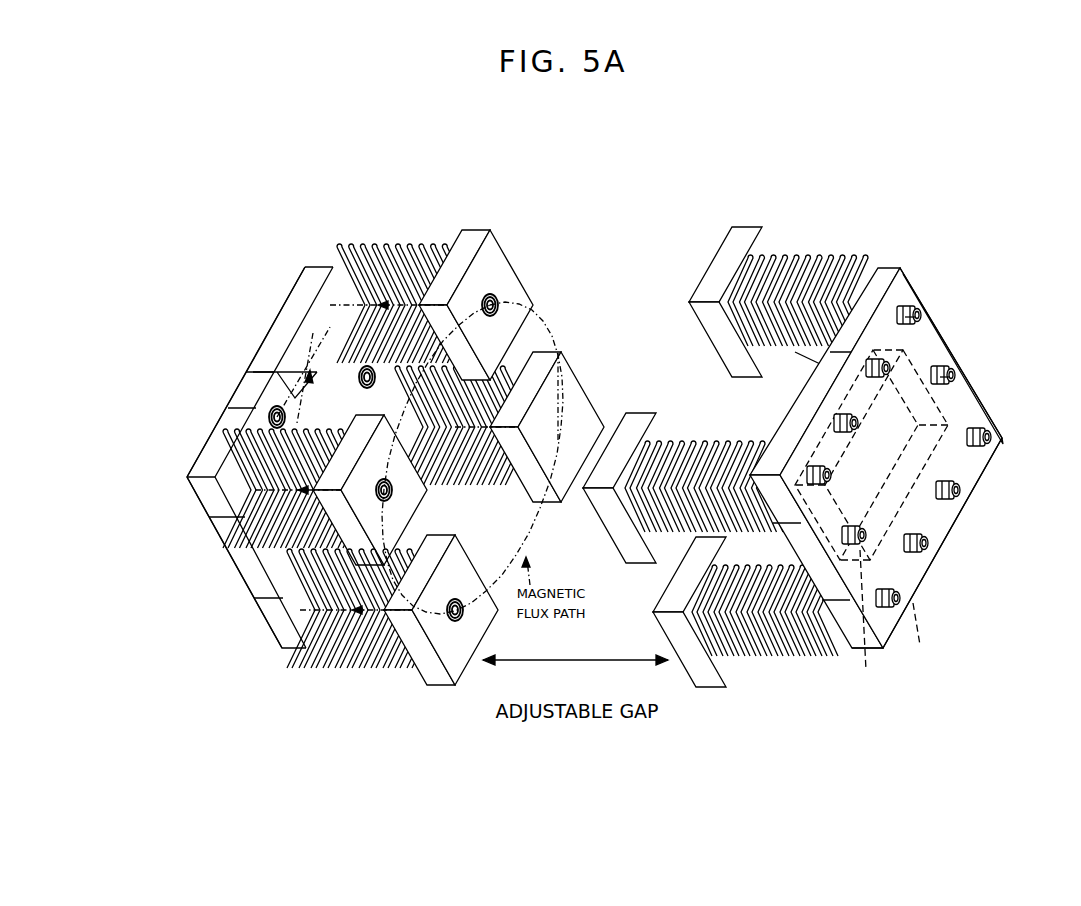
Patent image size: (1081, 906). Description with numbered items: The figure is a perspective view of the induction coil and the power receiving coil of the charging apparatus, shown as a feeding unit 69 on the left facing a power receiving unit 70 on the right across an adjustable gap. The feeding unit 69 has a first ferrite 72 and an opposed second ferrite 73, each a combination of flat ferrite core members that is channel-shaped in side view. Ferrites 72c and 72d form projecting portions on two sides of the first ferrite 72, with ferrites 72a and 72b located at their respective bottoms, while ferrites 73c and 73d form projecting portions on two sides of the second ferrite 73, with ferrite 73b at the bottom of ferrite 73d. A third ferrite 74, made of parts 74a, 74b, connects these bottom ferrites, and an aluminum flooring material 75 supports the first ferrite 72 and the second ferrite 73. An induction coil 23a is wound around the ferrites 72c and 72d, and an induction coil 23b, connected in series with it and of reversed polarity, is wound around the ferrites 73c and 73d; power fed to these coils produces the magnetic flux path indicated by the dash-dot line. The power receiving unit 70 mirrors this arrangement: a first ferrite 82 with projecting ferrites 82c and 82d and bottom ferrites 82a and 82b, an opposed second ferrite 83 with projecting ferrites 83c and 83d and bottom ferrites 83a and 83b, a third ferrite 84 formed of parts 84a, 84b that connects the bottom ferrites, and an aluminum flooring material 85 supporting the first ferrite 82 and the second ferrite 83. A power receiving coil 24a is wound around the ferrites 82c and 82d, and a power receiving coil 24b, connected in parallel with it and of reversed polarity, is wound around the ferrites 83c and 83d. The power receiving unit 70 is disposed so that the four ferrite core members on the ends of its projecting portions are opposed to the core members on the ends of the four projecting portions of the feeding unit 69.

The feeding unit 69 is at (180, 333).
The power receiving unit 70 is at (957, 607).
The first ferrite 72 is at (522, 268).
The ferrite 72a is at (305, 312).
The ferrite 72b is at (222, 405).
The ferrite 72c is at (475, 238).
The ferrite 72d is at (428, 490).
The second ferrite 73 is at (594, 382).
The ferrite 73b is at (281, 632).
The ferrite 73c is at (571, 377).
The ferrite 73d is at (443, 678).
The third ferrite 74 is at (237, 585).
The third ferrite portion 74a is at (352, 380).
The third ferrite portion 74b is at (252, 558).
The aluminum flooring material 75 is at (226, 406).
The induction coil 23a is at (250, 515).
The induction coil 23b is at (367, 668).
The power receiving coil 24a is at (680, 527).
The power receiving coil 24b is at (780, 643).
The first ferrite 82 is at (935, 301).
The ferrite 82a is at (917, 300).
The ferrite 82b is at (780, 447).
The ferrite 82c is at (738, 231).
The ferrite 82d is at (615, 545).
The second ferrite 83 is at (1000, 420).
The ferrite 83a is at (960, 462).
The ferrite 83b is at (910, 637).
The ferrite 83c is at (780, 403).
The ferrite 83d is at (690, 670).
The third ferrite 84 is at (970, 365).
The third ferrite portion 84a is at (948, 320).
The third ferrite portion 84b is at (872, 655).
The aluminum flooring material 85 is at (937, 520).